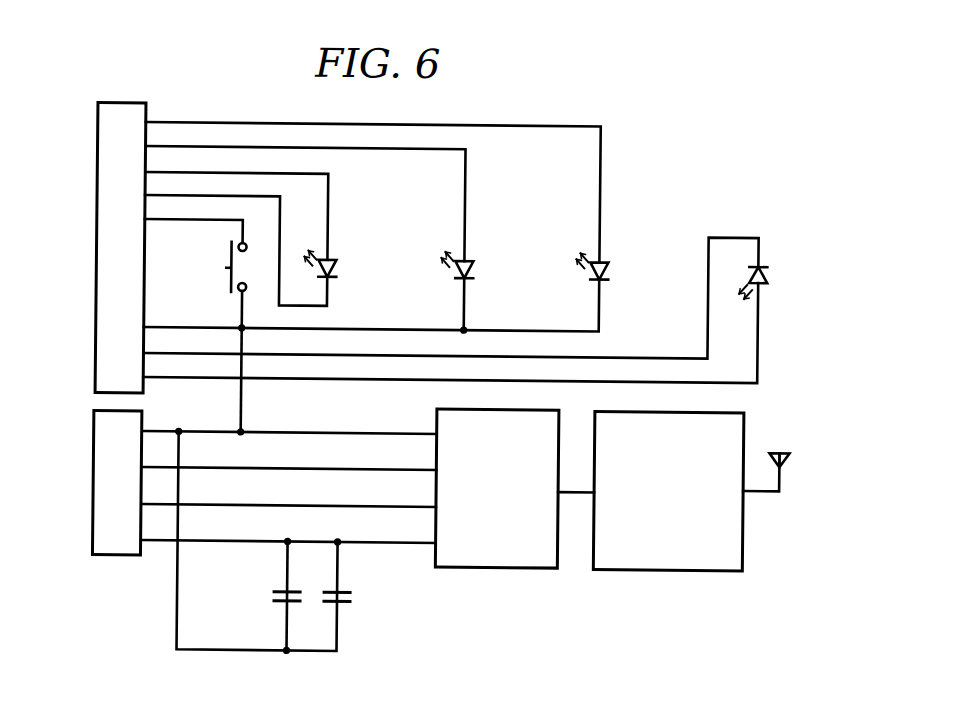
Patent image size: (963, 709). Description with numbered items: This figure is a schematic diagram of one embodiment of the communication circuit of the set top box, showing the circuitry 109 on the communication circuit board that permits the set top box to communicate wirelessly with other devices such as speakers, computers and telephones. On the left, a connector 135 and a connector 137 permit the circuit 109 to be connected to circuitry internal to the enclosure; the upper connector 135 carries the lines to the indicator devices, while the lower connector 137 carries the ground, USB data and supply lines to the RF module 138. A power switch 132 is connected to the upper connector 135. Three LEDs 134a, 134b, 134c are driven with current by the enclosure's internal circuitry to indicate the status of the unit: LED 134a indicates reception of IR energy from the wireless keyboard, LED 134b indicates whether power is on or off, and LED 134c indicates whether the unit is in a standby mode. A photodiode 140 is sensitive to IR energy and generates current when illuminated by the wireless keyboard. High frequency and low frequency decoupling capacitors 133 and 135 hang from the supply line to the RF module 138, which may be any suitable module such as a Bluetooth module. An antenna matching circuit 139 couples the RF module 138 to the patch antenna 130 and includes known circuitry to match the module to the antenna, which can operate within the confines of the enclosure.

The circuitry 109 is at (696, 103).
The patch antenna 130 is at (784, 444).
The power switch 132 is at (230, 285).
The decoupling capacitor 133 is at (274, 596).
The LED 134a is at (334, 268).
The LED 134b is at (471, 268).
The LED 134c is at (606, 268).
The connector / decoupling capacitor 135 is at (96, 250).
The connector 137 is at (95, 478).
The RF module 138 is at (520, 536).
The antenna matching circuit 139 is at (745, 527).
The photodiode 140 is at (765, 270).